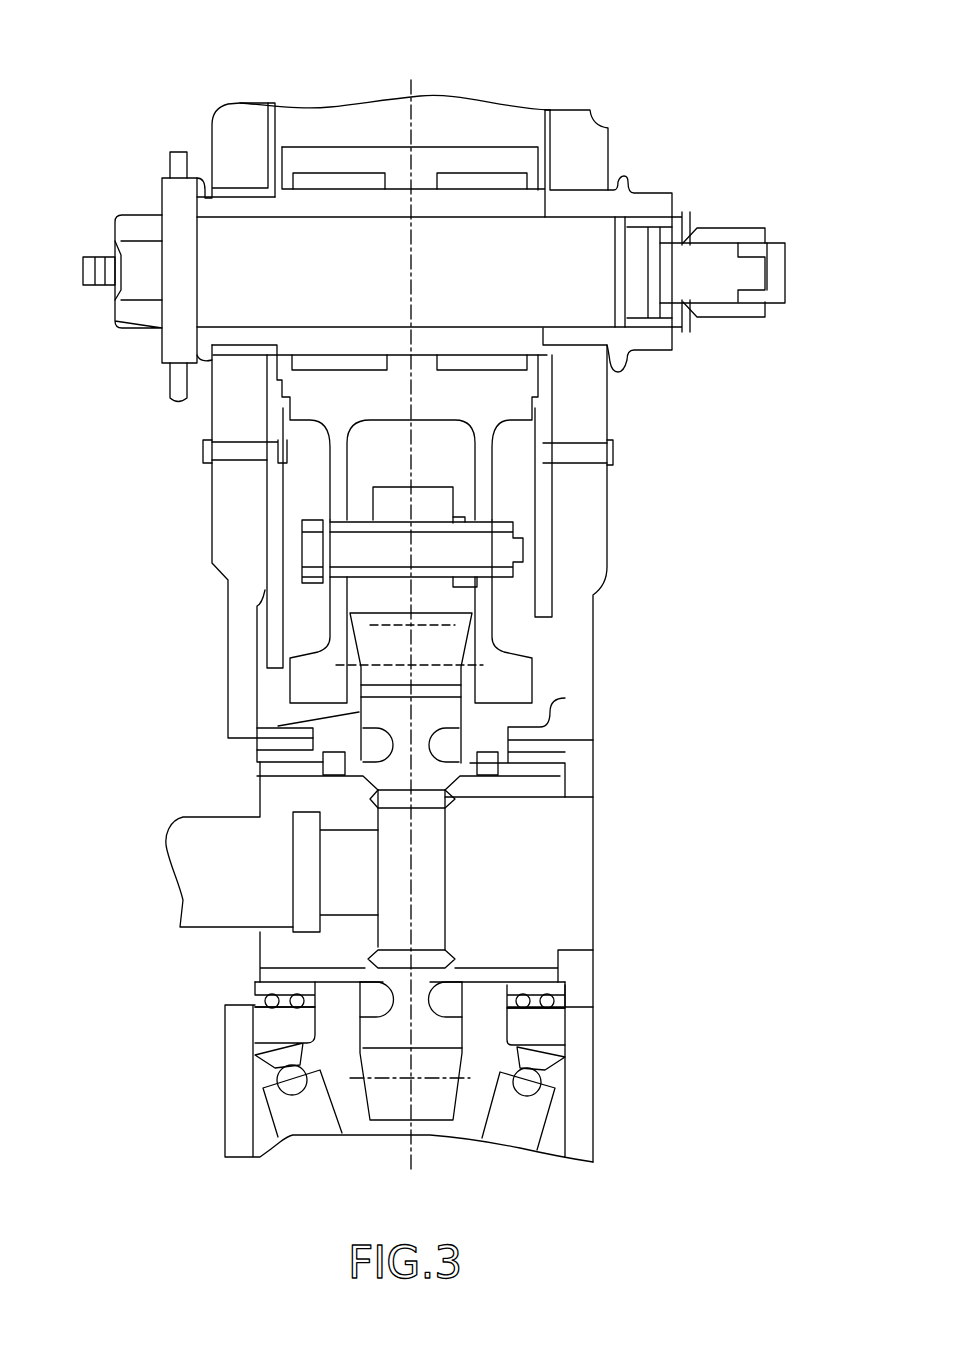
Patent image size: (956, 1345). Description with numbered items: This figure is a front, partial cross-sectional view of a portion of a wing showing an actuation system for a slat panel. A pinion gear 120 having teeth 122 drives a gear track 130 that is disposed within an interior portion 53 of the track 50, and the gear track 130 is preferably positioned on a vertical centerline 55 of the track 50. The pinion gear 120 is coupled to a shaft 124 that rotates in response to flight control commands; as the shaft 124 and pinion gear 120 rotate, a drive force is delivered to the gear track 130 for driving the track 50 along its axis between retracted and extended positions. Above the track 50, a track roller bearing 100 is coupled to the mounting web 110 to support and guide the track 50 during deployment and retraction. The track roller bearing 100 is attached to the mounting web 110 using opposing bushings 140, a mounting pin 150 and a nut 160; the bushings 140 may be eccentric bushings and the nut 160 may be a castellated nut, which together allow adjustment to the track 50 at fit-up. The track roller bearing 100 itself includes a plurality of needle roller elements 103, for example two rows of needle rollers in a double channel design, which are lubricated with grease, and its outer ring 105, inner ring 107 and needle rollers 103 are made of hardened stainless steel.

The track 50 is at (328, 480).
The interior portion 53 is at (455, 470).
The vertical centerline 55 is at (411, 1152).
The track roller bearing 100 is at (486, 172).
The needle roller elements 103 is at (556, 125).
The outer ring 105 is at (420, 147).
The inner ring 107 is at (425, 187).
The mounting web 110 is at (612, 400).
The pinion gear 120 is at (313, 727).
The teeth 122 is at (463, 642).
The shaft 124 is at (583, 837).
The gear track 130 is at (377, 487).
The opposing bushings 140 is at (203, 166).
The mounting pin 150 is at (352, 213).
The nut 160 is at (745, 228).